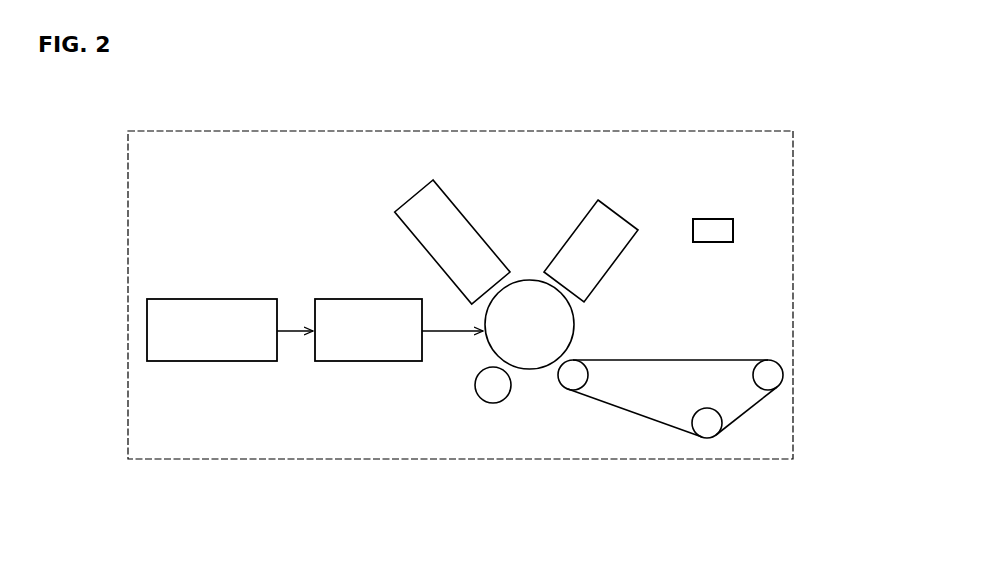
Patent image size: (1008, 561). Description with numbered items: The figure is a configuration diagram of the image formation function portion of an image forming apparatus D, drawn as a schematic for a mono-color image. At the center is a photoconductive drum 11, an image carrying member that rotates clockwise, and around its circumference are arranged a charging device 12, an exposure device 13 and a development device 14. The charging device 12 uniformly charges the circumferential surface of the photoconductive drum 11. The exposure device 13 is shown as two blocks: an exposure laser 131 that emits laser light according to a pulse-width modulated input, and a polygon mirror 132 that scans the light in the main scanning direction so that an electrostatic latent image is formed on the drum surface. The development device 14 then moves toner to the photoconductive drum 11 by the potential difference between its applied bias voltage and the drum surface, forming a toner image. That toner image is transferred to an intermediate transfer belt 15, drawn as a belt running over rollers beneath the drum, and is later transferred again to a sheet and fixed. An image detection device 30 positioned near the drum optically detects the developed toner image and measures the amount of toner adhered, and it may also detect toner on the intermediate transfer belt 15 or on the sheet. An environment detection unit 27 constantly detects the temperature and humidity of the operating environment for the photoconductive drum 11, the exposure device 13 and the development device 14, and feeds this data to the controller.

The image forming apparatus D is at (127, 268).
The photoconductive drum 11 is at (577, 330).
The charging device 12 is at (476, 394).
The exposure device 13 is at (328, 216).
The exposure laser 131 is at (240, 299).
The polygon mirror 132 is at (366, 299).
The development device 14 is at (458, 200).
The intermediate transfer belt 15 is at (723, 358).
The environment detection unit 27 is at (722, 219).
The image detection device 30 is at (620, 212).